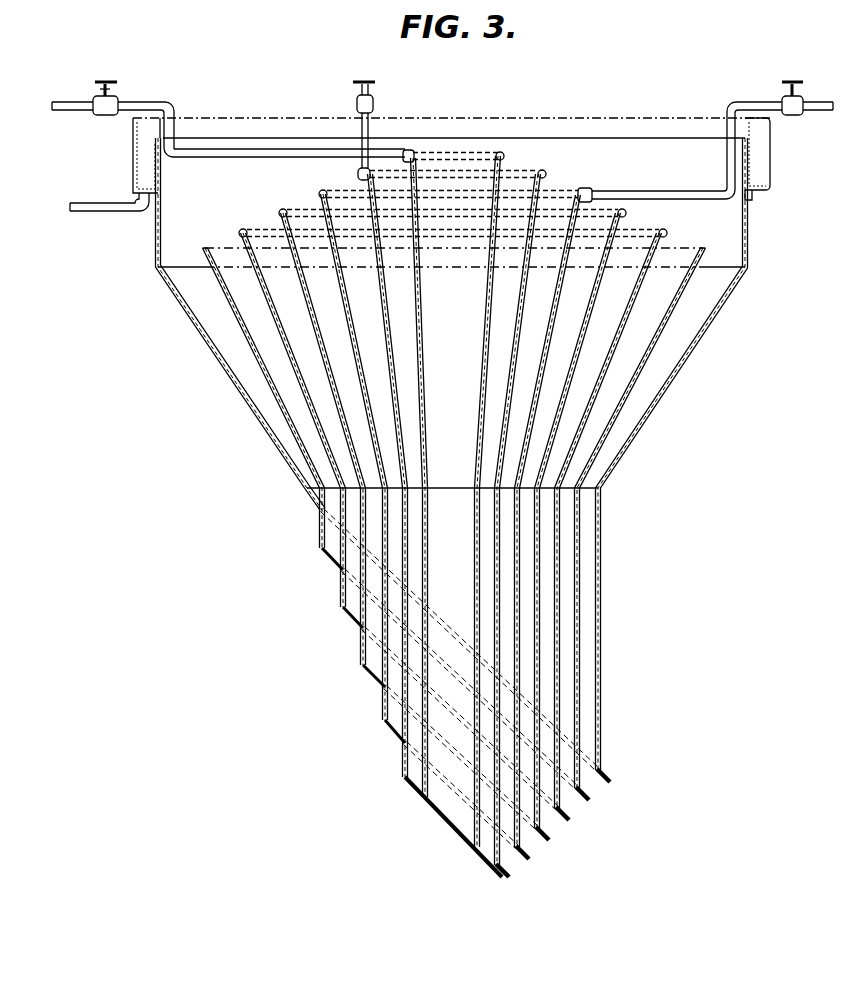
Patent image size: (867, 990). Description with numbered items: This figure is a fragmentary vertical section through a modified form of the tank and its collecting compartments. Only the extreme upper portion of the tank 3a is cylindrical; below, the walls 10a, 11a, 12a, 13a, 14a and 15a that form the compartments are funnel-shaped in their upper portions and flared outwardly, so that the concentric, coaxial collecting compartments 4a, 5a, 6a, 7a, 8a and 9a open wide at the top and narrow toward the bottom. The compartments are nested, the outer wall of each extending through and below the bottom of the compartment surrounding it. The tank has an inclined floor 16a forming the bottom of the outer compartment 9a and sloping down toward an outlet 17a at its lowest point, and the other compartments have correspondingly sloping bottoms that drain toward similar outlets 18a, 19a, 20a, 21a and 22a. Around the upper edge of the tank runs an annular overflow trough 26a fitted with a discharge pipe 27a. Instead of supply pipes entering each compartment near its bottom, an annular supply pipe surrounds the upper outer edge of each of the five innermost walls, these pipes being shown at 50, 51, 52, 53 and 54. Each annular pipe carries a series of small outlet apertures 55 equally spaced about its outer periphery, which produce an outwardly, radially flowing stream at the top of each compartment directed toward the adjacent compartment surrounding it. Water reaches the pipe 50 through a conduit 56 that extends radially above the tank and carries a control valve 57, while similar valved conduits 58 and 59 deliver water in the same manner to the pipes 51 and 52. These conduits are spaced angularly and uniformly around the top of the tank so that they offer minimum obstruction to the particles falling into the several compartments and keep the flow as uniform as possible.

The tank 3a is at (157, 228).
The collecting compartment 4a is at (388, 187).
The collecting compartment 5a is at (348, 207).
The collecting compartment 6a is at (307, 227).
The collecting compartment 7a is at (267, 247).
The collecting compartment 8a is at (228, 258).
The collecting compartment 9a is at (183, 280).
The wall 10a is at (487, 283).
The wall 11a is at (523, 283).
The wall 12a is at (555, 308).
The wall 13a is at (593, 308).
The wall 14a is at (635, 283).
The wall 15a is at (667, 319).
The inclined floor 16a is at (445, 635).
The outlet 17a is at (608, 783).
The outlet 18a is at (586, 804).
The outlet 19a is at (569, 826).
The outlet 20a is at (549, 843).
The outlet 21a is at (526, 860).
The outlet 22a is at (503, 878).
The annular overflow trough 26a is at (145, 145).
The discharge pipe 27a is at (102, 206).
The annular supply pipe 50 is at (502, 152).
The annular supply pipe 51 is at (544, 170).
The annular supply pipe 52 is at (583, 189).
The annular supply pipe 53 is at (623, 209).
The annular supply pipe 54 is at (667, 232).
The outlet apertures 55 is at (465, 170).
The conduit 56 is at (240, 149).
The control valve 57 is at (117, 96).
The conduit 58 is at (361, 149).
The conduit 59 is at (727, 155).